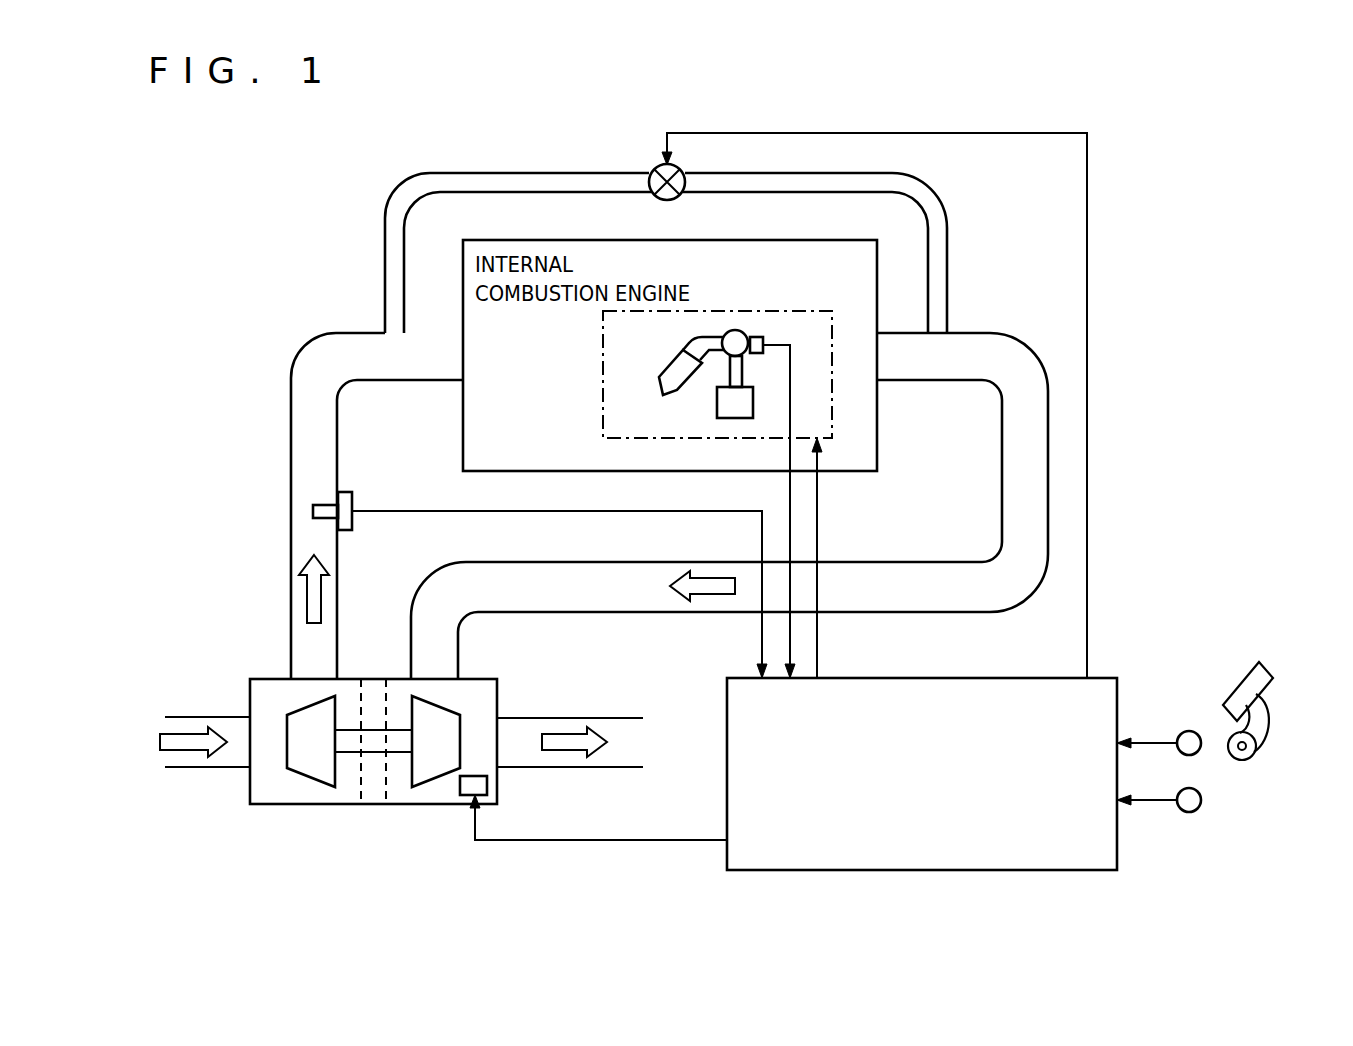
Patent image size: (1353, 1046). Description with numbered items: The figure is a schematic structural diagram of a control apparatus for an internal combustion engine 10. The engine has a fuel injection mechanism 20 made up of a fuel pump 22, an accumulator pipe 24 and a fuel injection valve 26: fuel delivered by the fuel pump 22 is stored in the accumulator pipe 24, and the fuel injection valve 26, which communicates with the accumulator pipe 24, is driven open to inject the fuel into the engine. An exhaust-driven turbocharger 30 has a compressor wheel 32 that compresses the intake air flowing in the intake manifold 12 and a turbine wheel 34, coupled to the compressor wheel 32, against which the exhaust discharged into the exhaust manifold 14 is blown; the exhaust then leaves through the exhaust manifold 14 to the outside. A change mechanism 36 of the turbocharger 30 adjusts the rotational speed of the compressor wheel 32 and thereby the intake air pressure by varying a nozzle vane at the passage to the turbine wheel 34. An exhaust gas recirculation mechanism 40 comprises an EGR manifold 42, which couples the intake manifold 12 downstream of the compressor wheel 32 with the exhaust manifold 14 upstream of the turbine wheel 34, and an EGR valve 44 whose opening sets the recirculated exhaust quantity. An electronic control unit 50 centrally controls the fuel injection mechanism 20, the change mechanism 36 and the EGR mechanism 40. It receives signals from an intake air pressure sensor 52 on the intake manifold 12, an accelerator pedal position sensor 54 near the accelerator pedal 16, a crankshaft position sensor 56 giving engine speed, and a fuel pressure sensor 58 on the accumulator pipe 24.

The internal combustion engine 10 is at (877, 428).
The intake manifold 12 is at (291, 458).
The exhaust manifold 14 is at (986, 336).
The accelerator pedal 16 is at (1240, 678).
The fuel injection mechanism 20 is at (603, 395).
The fuel pump 22 is at (717, 402).
The accumulator pipe 24 is at (734, 330).
The fuel injection valve 26 is at (668, 372).
The exhaust-driven turbocharger 30 is at (370, 811).
The compressor wheel 32 is at (308, 768).
The turbine wheel 34 is at (436, 765).
The change mechanism 36 is at (487, 786).
The exhaust gas recirculation mechanism 40 is at (600, 146).
The EGR manifold 42 is at (516, 184).
The EGR valve 44 is at (673, 198).
The electronic control unit 50 is at (985, 870).
The intake air pressure sensor 52 is at (347, 491).
The accelerator pedal position sensor 54 is at (1183, 730).
The crankshaft position sensor 56 is at (1188, 812).
The fuel pressure sensor 58 is at (757, 337).